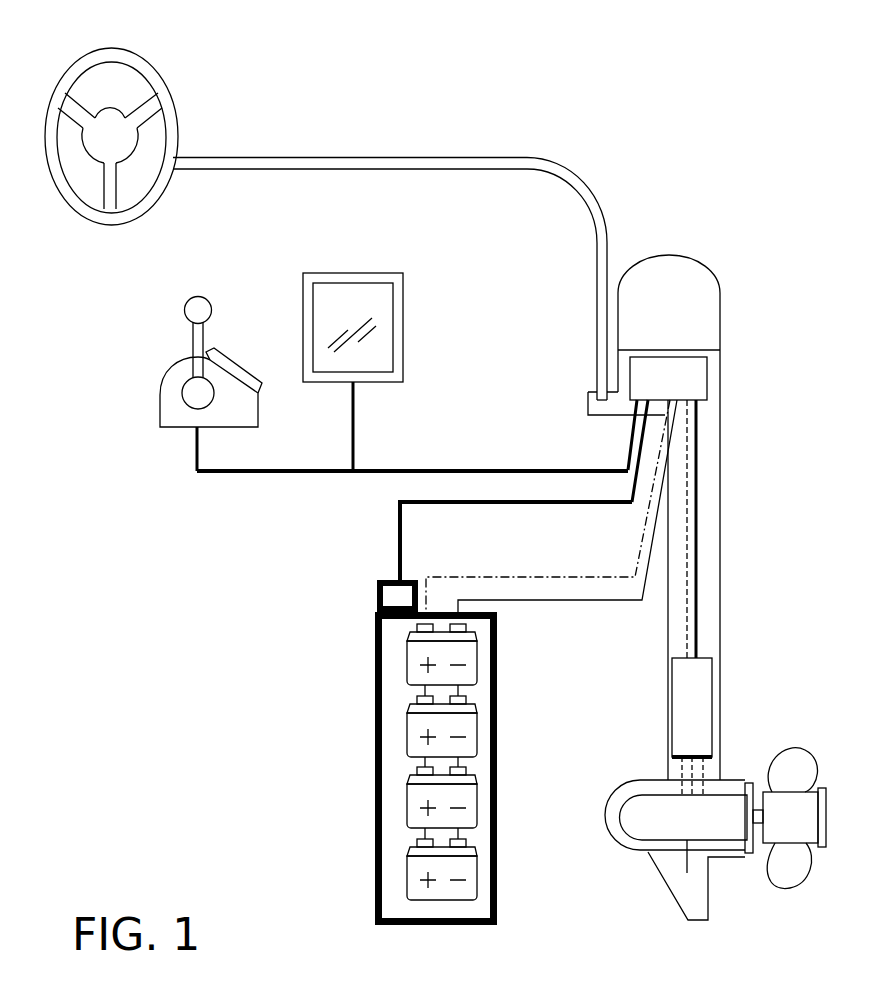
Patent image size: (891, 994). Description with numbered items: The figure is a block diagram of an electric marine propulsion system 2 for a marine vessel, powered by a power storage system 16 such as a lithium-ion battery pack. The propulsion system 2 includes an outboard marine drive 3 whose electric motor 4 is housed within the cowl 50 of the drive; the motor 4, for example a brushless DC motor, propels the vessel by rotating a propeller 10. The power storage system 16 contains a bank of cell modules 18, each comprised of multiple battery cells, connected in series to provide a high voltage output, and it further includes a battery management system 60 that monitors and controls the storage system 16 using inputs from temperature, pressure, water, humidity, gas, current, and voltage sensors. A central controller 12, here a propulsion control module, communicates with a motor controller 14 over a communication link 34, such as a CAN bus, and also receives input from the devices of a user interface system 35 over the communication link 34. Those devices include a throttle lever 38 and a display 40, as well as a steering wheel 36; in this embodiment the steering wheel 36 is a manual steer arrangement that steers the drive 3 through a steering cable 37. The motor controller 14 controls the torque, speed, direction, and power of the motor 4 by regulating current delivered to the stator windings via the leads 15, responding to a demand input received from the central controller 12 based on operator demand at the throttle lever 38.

The electric marine propulsion system 2 is at (648, 100).
The outboard marine drive 3 is at (706, 270).
The electric motor 4 is at (685, 862).
The propeller 10 is at (800, 858).
The central controller 12 is at (707, 378).
The motor controller 14 is at (712, 690).
The leads 15 is at (678, 768).
The power storage system 16 is at (352, 742).
The cell modules 18 is at (477, 648).
The communication link 34 is at (460, 470).
The user interface system 35 is at (417, 77).
The steering wheel 36 is at (140, 62).
The steering cable 37 is at (343, 157).
The throttle lever 38 is at (202, 296).
The display 40 is at (355, 273).
The cowl 50 is at (670, 253).
The battery management system 60 is at (377, 600).